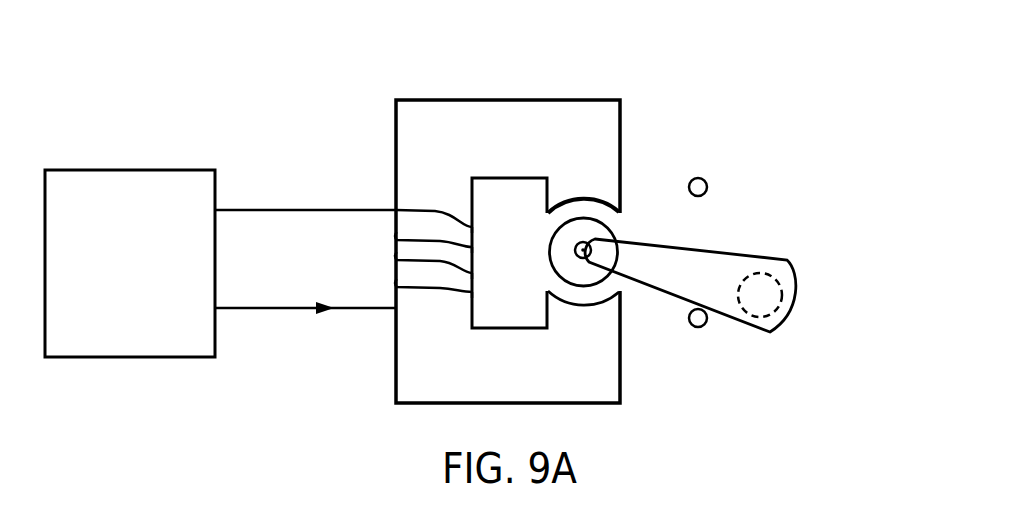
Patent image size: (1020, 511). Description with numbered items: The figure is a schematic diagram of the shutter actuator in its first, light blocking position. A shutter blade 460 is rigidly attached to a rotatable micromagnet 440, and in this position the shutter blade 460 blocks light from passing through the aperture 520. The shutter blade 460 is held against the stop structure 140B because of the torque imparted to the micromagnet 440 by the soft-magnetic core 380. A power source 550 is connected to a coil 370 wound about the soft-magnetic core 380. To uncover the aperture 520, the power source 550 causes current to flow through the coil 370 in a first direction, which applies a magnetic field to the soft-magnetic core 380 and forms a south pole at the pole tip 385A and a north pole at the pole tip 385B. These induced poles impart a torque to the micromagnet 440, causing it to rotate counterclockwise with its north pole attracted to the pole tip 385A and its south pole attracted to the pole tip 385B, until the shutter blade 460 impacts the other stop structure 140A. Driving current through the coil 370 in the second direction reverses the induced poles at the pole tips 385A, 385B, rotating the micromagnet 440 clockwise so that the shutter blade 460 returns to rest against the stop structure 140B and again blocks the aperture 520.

The power source 550 is at (146, 169).
The soft-magnetic core 380 is at (560, 98).
The coil 370 is at (383, 210).
The pole tip 385A is at (607, 183).
The pole tip 385B is at (603, 322).
The rotatable micromagnet 440 is at (614, 232).
The shutter blade 460 is at (794, 316).
The aperture 520 is at (776, 284).
The stop structure 140A is at (705, 181).
The stop structure 140B is at (699, 327).